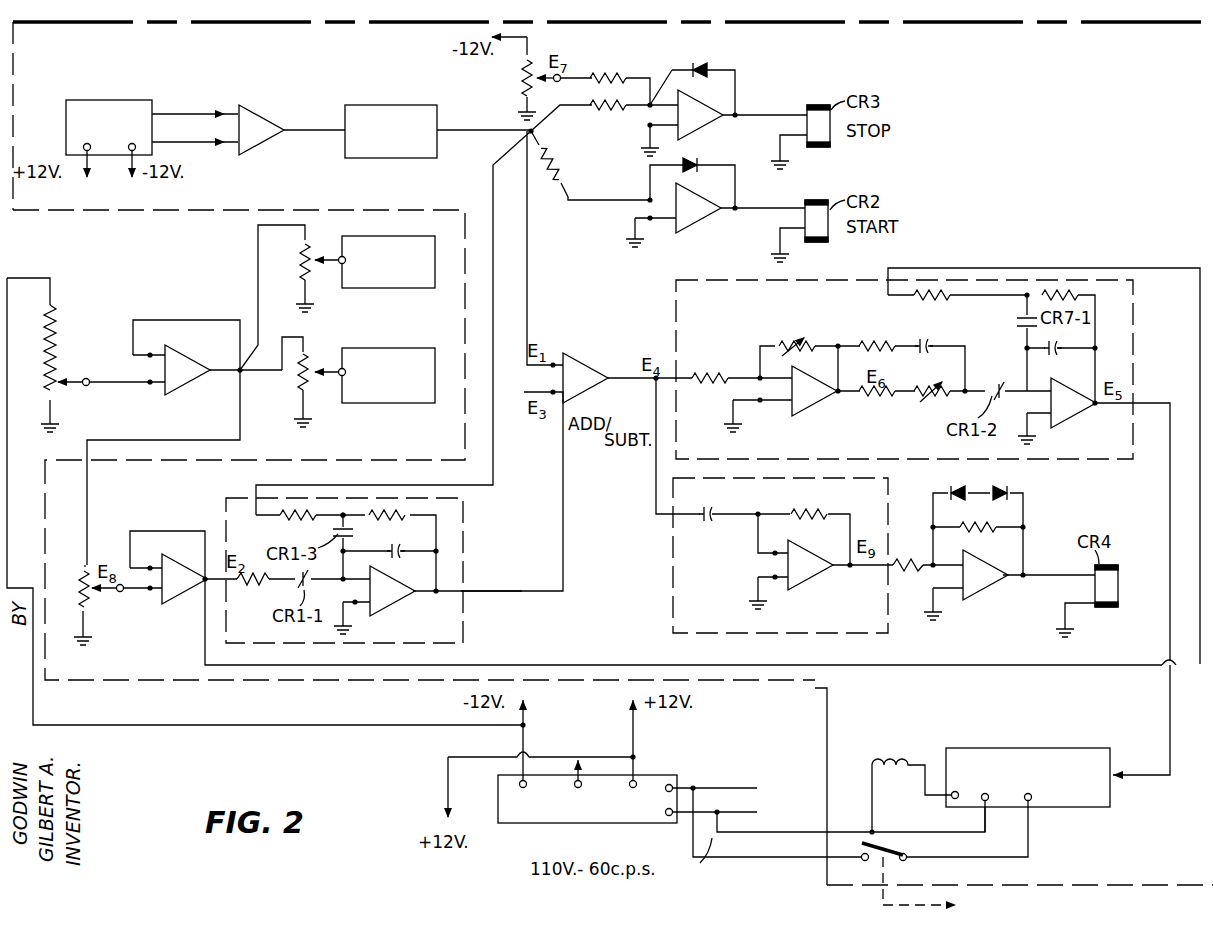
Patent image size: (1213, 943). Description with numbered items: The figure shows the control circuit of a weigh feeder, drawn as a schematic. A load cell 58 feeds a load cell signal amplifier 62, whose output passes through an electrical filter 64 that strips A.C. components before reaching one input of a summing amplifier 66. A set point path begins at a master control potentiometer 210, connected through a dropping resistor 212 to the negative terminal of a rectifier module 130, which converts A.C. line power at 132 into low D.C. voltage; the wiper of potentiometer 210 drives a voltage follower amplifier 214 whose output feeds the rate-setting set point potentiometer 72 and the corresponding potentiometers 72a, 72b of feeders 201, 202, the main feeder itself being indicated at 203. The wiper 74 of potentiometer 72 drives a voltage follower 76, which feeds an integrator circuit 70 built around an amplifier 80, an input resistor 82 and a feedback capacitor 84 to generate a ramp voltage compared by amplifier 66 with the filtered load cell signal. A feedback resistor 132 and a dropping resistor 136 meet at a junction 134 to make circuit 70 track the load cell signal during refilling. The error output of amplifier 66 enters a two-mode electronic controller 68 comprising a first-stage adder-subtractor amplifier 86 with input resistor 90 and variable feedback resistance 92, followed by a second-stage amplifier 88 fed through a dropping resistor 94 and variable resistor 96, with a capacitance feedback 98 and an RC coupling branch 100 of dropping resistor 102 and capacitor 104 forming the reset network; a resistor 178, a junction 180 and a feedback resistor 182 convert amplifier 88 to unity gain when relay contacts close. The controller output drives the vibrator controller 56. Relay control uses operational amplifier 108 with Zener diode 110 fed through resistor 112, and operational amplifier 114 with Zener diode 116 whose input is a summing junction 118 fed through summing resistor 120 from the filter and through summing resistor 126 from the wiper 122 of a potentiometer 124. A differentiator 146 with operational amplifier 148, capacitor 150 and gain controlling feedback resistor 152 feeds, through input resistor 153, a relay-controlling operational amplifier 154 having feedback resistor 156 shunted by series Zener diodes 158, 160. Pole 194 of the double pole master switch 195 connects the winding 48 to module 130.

The winding 48 is at (892, 752).
The vibrator controller 56 is at (1066, 748).
The load cell 58 is at (116, 101).
The load cell signal amplifier 62 is at (256, 115).
The electrical filter 64 is at (382, 105).
The summing amplifier 66 is at (580, 364).
The two-mode electronic controller 68 is at (1138, 305).
The integrator circuit 70 is at (467, 568).
The rate-setting set point potentiometer 72 is at (78, 580).
The potentiometer of feeder 201 72a is at (301, 264).
The potentiometer of feeder 202 72b is at (297, 378).
The potentiometer wiper 74 is at (110, 592).
The voltage follower 76 is at (174, 604).
The amplifier 80 is at (388, 603).
The resistor 82 is at (248, 590).
The feedback capacitor 84 is at (398, 553).
The first-stage adder-subtractor amplifier 86 is at (806, 420).
The second-stage amplifier 88 is at (1076, 420).
The input resistor 90 is at (714, 376).
The variable feedback resistance 92 is at (799, 347).
The dropping resistor 94 is at (872, 402).
The variable resistor 96 is at (929, 409).
The capacitance feedback 98 is at (1056, 353).
The RC coupling branch 100 is at (929, 352).
The dropping resistor 102 is at (868, 344).
The capacitor 104 is at (928, 342).
The operational amplifier 108 is at (692, 230).
The Zener diode 110 is at (704, 164).
The resistor 112 is at (565, 172).
The operational amplifier 114 is at (689, 104).
The Zener diode 116 is at (704, 66).
The signal voltage summing junction 118 is at (650, 100).
The summing resistor 120 is at (607, 107).
The wiper 122 is at (547, 84).
The potentiometer 124 is at (517, 77).
The summing resistor 126 is at (603, 74).
The full wave rectifier module 130 is at (497, 800).
The feedback resistor / A.C. line power 132 is at (768, 772).
The junction 134 is at (340, 516).
The dropping resistor 136 is at (290, 518).
The differentiator 146 is at (672, 574).
The operational amplifier 148 is at (806, 575).
The capacitor 150 is at (712, 510).
The gain controlling feedback resistor 152 is at (810, 510).
The input resistor 153 is at (904, 572).
The relay-controlling operational amplifier 154 is at (979, 598).
The feedback resistor 156 is at (978, 530).
The Zener diode 158 is at (956, 486).
The Zener diode 160 is at (1005, 488).
The resistor 178 is at (957, 309).
The junction 180 is at (1022, 297).
The feedback resistor 182 is at (1056, 291).
The pole of master switch 194 is at (876, 860).
The double pole master switch 195 is at (896, 843).
The feeder 201 is at (364, 236).
The feeder 202 is at (364, 348).
The feeder 203 is at (367, 209).
The master control potentiometer 210 is at (55, 378).
The dropping resistor 212 is at (55, 330).
The voltage follower amplifier 214 is at (190, 393).